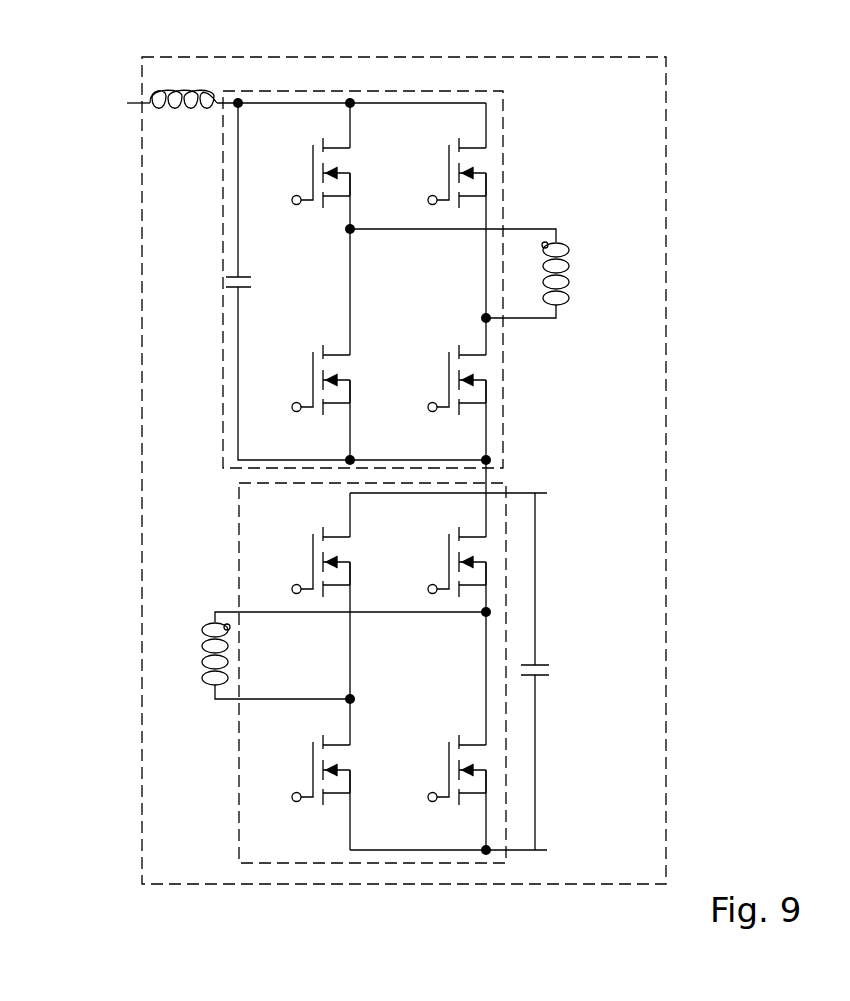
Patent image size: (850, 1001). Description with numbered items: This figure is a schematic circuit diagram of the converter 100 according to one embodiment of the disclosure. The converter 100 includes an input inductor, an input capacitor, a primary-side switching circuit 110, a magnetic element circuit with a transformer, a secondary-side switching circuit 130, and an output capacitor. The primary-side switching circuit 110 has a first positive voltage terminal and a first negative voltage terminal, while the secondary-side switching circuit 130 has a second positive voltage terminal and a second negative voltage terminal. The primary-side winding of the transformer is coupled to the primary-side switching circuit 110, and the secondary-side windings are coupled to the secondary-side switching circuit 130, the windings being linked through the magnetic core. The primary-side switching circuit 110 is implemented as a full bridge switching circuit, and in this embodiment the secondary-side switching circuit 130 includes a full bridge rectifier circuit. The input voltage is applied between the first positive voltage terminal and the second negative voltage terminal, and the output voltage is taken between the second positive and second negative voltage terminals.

The converter 100 is at (666, 93).
The primary-side switching circuit 110 is at (503, 110).
The secondary-side switching circuit 130 is at (383, 863).